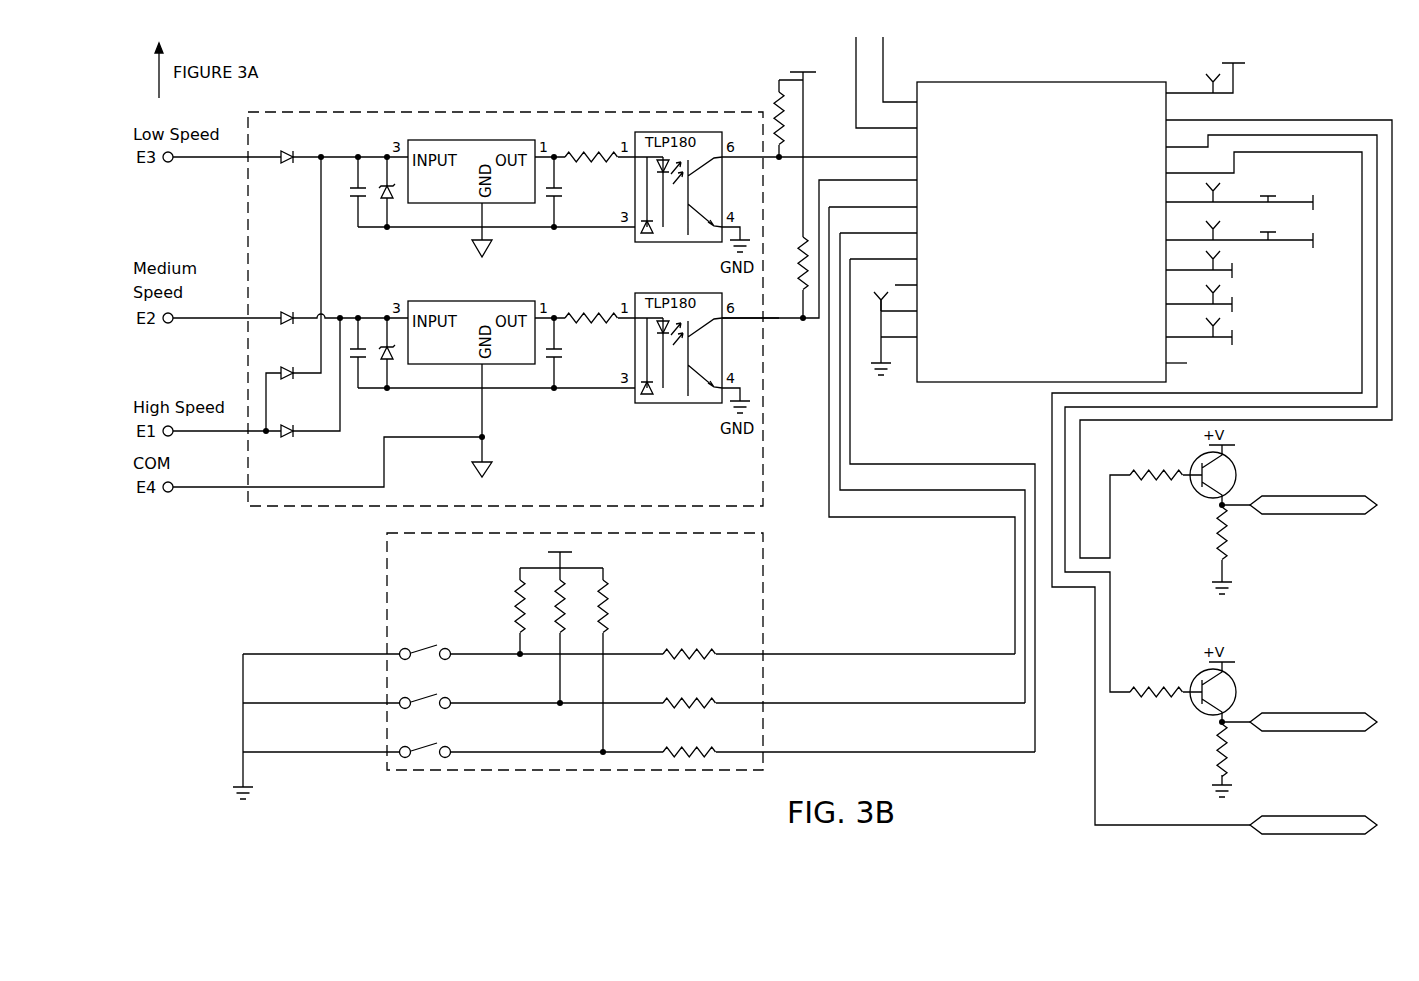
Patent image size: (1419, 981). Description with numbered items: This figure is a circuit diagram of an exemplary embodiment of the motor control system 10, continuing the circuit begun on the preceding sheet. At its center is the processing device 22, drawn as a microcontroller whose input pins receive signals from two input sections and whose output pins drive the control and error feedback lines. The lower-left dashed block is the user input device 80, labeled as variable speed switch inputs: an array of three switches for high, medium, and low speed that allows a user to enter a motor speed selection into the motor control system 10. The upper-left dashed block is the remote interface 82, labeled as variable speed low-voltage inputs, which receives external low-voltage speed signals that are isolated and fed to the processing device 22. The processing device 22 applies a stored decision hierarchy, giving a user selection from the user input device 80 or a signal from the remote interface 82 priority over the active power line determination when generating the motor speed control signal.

The motor control system 10 is at (1304, 74).
The processing device 22 is at (980, 386).
The user input device 80 is at (765, 600).
The remote interface 82 is at (765, 473).